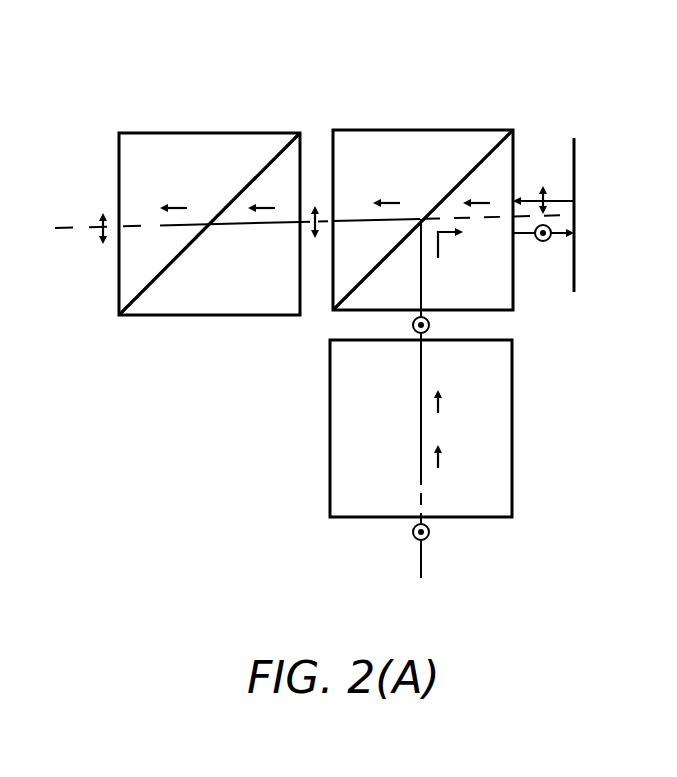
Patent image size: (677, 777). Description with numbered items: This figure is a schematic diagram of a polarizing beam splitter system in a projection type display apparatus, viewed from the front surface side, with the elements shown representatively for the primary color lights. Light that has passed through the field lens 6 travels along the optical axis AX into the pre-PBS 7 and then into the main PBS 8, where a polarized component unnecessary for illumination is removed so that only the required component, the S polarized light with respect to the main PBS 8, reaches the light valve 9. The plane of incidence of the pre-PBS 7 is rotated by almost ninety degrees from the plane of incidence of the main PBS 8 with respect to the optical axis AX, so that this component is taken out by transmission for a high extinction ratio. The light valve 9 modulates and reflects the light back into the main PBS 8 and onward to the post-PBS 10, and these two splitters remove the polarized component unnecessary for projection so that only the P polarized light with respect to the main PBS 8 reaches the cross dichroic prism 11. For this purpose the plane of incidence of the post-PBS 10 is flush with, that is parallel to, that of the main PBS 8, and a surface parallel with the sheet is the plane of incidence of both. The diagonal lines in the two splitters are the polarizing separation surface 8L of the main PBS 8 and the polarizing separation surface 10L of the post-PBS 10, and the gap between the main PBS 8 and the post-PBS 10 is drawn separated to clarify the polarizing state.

The field lens 6 is at (408, 631).
The pre-PBS 7 is at (512, 447).
The main PBS 8 is at (437, 130).
The polarizing separation surface of the main PBS 8L is at (344, 299).
The light valve 9 is at (574, 140).
The post-PBS 10 is at (213, 133).
The polarizing separation surface of the post-PBS 10L is at (137, 297).
The cross dichroic prism 11 is at (43, 240).
The optical axis AX is at (424, 562).